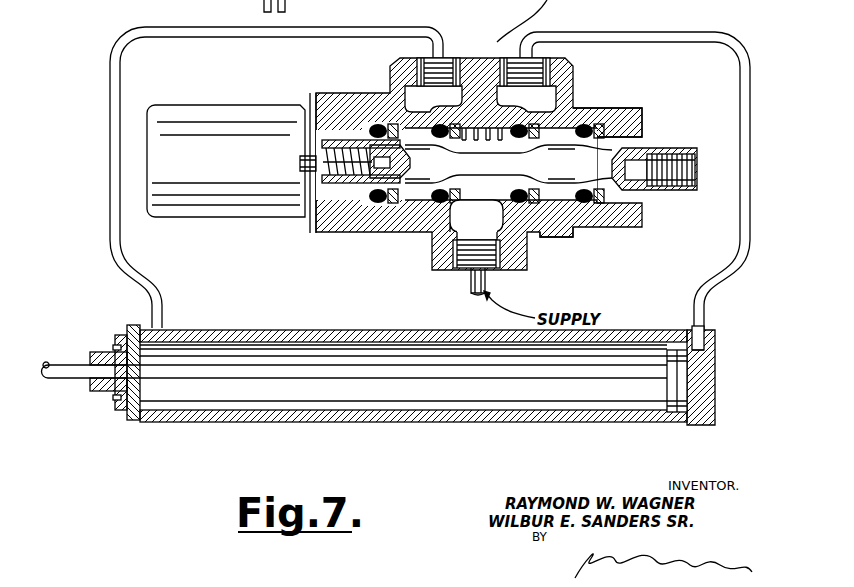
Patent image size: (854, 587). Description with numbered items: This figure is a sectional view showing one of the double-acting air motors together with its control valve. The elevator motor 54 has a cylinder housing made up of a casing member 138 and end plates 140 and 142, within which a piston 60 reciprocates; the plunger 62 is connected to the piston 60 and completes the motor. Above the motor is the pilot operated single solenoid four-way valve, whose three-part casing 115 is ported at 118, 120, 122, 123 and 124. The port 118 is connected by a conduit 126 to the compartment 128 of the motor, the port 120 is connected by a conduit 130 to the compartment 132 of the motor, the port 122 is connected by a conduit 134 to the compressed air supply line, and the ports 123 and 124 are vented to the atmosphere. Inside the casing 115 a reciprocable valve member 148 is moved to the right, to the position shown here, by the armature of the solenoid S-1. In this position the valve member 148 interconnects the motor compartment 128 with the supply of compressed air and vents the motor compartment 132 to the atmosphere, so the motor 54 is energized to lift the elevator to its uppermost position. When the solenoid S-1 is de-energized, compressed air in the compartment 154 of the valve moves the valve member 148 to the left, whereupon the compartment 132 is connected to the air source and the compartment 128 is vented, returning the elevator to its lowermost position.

The solenoid S-1 is at (208, 113).
The elevator motor 54 is at (463, 428).
The piston 60 is at (678, 390).
The plunger 62 is at (283, 373).
The three-part casing 115 is at (570, 230).
The port 118 is at (455, 60).
The port 120 is at (557, 47).
The port 122 is at (500, 247).
The port 123 is at (640, 138).
The port 124 is at (360, 235).
The conduit 126 is at (368, 33).
The compartment 128 is at (250, 358).
The conduit 130 is at (660, 40).
The compartment 132 is at (703, 370).
The conduit 134 is at (471, 283).
The casing member 138 is at (352, 424).
The end plate 140 is at (700, 396).
The end plate 142 is at (127, 416).
The reciprocable valve member 148 is at (575, 100).
The compartment 154 is at (413, 190).